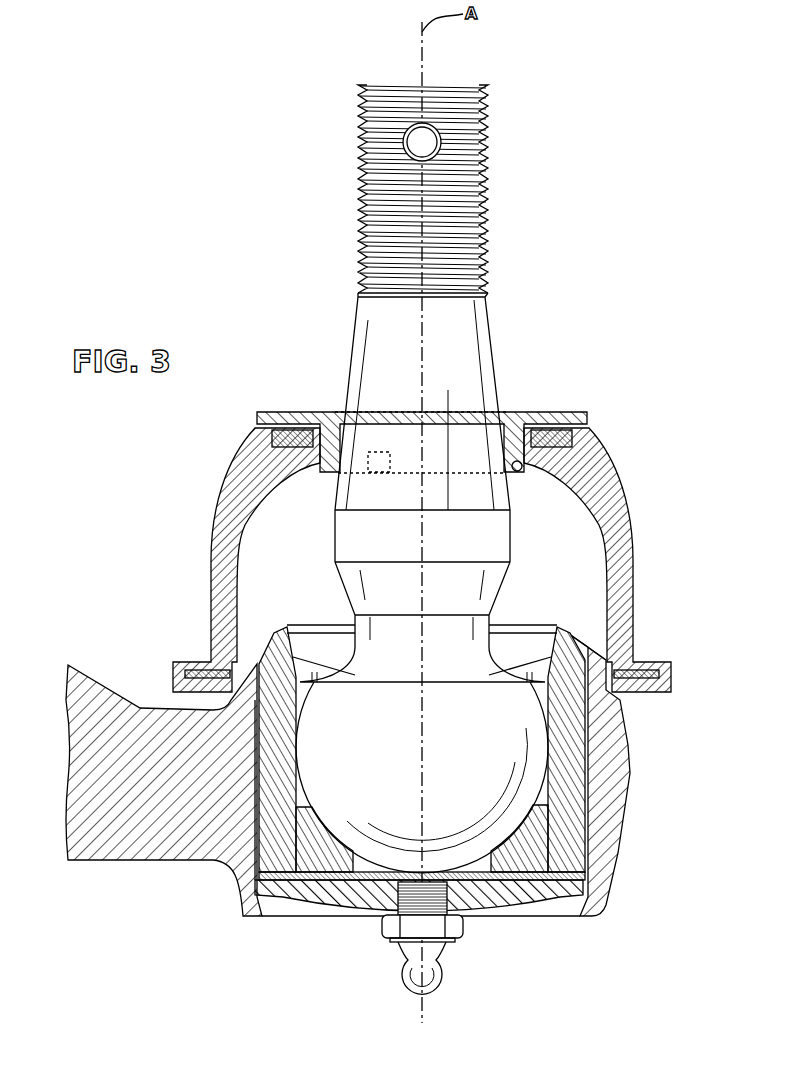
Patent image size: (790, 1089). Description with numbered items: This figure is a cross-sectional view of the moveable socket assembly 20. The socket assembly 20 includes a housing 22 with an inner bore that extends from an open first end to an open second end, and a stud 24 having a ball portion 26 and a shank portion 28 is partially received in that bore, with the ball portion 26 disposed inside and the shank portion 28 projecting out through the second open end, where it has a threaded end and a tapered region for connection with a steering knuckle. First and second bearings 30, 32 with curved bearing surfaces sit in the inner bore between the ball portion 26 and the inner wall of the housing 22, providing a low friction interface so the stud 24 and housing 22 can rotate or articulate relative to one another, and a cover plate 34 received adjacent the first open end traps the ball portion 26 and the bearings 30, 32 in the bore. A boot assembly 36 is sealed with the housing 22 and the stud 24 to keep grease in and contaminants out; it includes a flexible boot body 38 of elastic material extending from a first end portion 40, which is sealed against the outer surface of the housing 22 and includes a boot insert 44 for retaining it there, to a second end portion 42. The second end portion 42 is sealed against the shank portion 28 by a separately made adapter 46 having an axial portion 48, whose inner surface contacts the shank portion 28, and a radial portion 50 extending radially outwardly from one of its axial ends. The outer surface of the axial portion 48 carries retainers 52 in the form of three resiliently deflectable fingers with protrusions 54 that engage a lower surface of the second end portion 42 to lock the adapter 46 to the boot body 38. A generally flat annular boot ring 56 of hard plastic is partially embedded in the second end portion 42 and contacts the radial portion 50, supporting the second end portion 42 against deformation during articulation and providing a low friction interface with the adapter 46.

The socket assembly 20 is at (559, 160).
The housing 22 is at (640, 740).
The stud 24 is at (496, 340).
The ball portion 26 is at (454, 728).
The shank portion 28 is at (385, 345).
The first bearing 30 is at (553, 693).
The second bearing 32 is at (513, 827).
The cover plate 34 is at (333, 887).
The boot assembly 36 is at (210, 502).
The flexible boot body 38 is at (220, 562).
The first end portion 40 is at (178, 663).
The second end portion 42 is at (278, 467).
The boot insert 44 is at (182, 683).
The adapter 46 is at (555, 408).
The axial portion 48 is at (346, 425).
The radial portion 50 is at (270, 412).
The retainers 52 is at (514, 463).
The protrusions 54 is at (605, 467).
The boot ring 56 is at (262, 440).